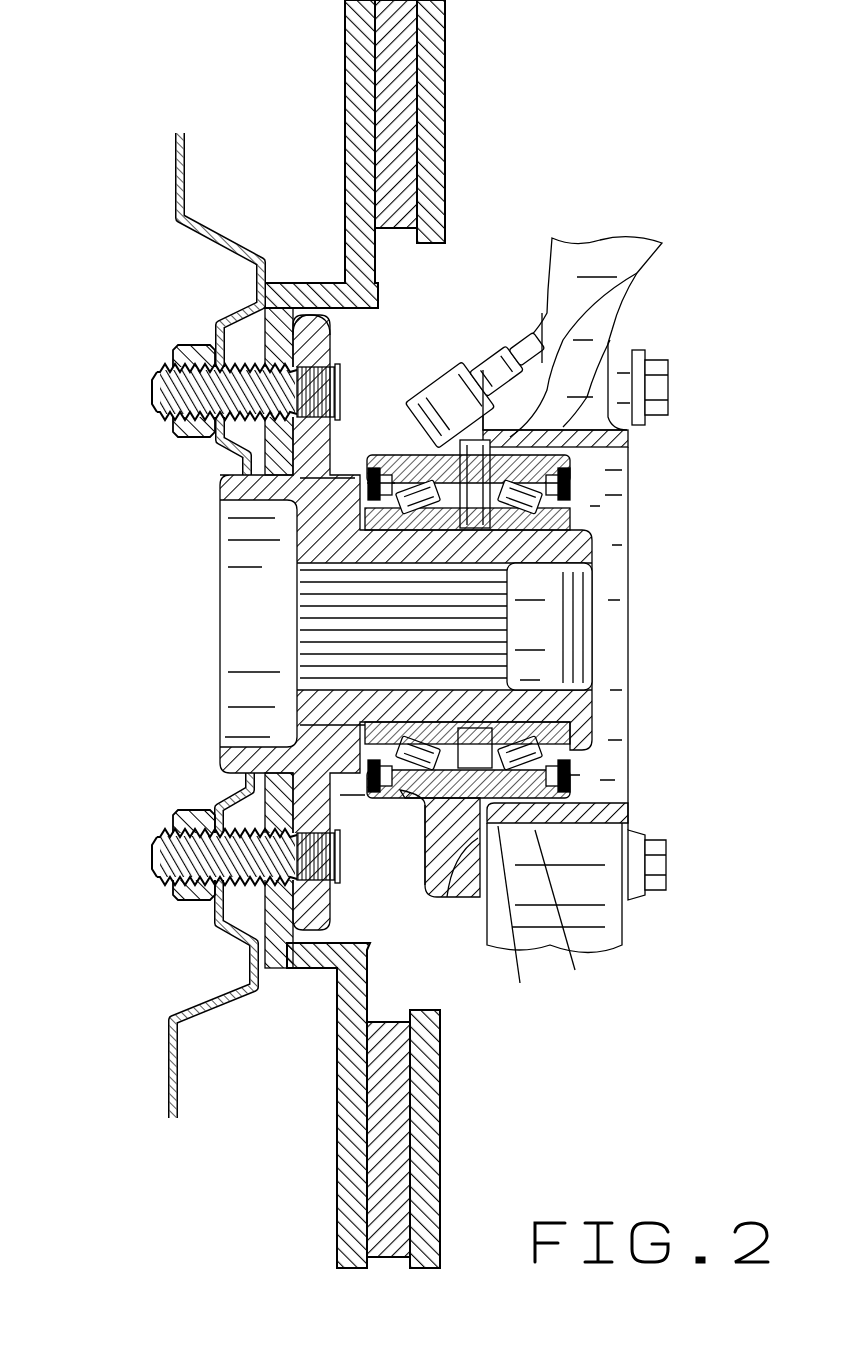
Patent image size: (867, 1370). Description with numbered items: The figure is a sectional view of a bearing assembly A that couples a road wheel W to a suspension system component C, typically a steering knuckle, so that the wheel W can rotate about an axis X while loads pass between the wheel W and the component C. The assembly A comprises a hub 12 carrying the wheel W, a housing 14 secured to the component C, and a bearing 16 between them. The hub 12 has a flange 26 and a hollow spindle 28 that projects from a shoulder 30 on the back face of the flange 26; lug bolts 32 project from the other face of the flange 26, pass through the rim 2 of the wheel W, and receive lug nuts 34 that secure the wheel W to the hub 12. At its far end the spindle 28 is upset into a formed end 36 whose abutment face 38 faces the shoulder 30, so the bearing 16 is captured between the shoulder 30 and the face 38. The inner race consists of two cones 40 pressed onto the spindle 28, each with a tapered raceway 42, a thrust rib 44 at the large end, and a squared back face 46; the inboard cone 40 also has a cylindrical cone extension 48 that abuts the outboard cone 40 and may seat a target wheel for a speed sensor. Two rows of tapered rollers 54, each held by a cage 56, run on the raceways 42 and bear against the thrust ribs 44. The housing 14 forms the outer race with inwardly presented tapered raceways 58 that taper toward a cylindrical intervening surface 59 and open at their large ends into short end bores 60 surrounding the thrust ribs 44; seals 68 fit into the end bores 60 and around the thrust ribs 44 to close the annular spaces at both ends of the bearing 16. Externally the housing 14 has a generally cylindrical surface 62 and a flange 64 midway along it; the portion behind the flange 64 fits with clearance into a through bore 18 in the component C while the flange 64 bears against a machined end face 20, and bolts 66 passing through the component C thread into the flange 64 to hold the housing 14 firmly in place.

The rim 2 is at (250, 262).
The hub 12 is at (220, 522).
The housing 14 is at (605, 330).
The bearing 16 is at (527, 712).
The through bore 18 is at (625, 800).
The end face 20 is at (453, 897).
The flange 26 is at (332, 340).
The hollow spindle 28 is at (540, 555).
The shoulder 30 is at (290, 727).
The lug bolts 32 is at (160, 392).
The lug nuts 34 is at (175, 434).
The formed end 36 is at (598, 733).
The abutment face 38 is at (565, 497).
The cones 40 is at (330, 557).
The tapered raceway 42 is at (405, 808).
The thrust rib 44 is at (363, 777).
The back face 46 is at (355, 502).
The cone extension 48 is at (430, 690).
The tapered rollers 54 is at (407, 900).
The cage 56 is at (378, 466).
The tapered raceways 58 is at (407, 463).
The cylindrical intervening surface 59 is at (517, 919).
The end bores 60 is at (367, 483).
The exterior surface 62 is at (560, 830).
The flange 64 is at (427, 903).
The bolts 66 is at (665, 380).
The seals 68 is at (260, 793).
The bearing assembly A is at (443, 362).
The suspension system component C is at (630, 918).
The wheel W is at (168, 1091).
The axis X is at (687, 625).